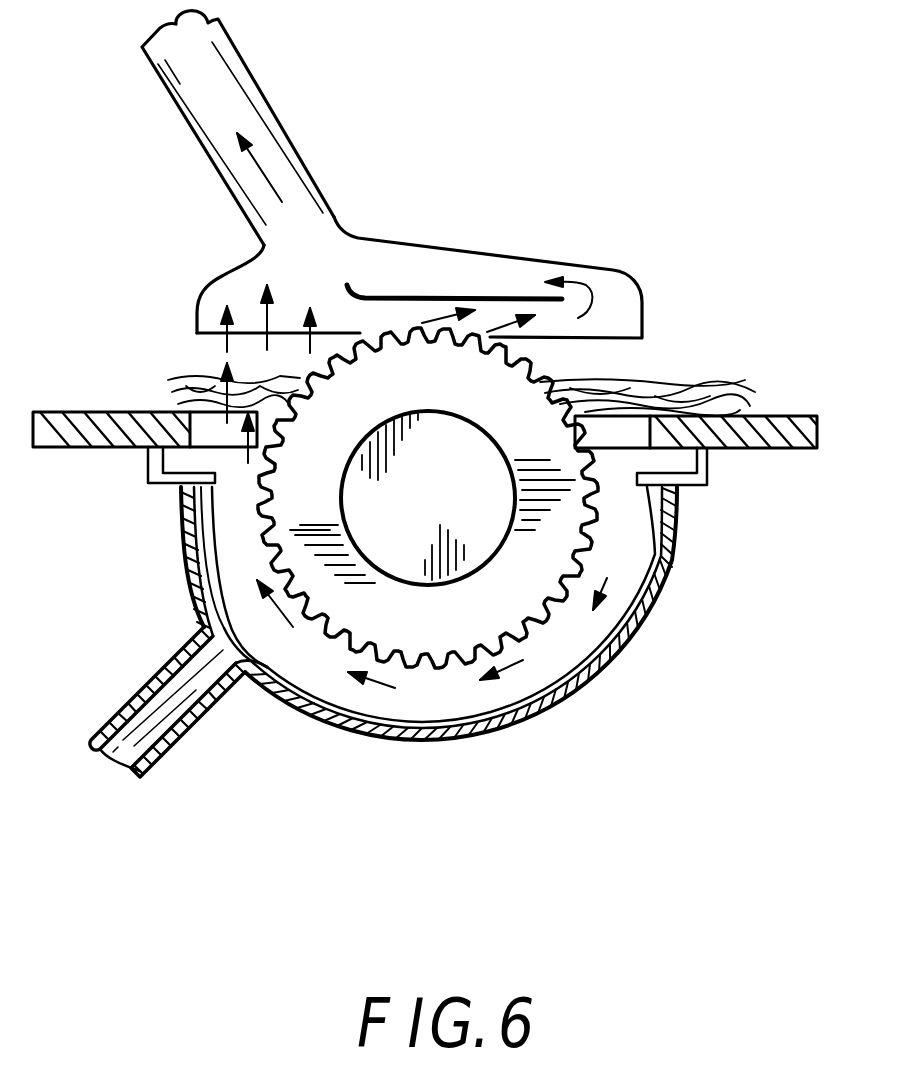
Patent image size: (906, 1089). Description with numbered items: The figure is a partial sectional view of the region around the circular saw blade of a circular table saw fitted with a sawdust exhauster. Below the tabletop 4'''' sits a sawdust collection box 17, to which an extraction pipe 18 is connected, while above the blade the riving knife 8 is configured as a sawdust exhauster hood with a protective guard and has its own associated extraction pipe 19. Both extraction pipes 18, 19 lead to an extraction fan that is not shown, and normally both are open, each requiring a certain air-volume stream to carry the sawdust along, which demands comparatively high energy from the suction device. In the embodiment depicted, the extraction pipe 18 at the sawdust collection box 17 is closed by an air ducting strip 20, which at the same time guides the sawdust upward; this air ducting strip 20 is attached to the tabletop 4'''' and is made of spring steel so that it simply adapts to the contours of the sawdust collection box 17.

The extraction pipe 19 is at (208, 84).
The riving knife 8 is at (445, 262).
The tabletop 4'''' is at (435, 467).
The sawdust collection box 17 is at (612, 670).
The extraction pipe 18 is at (137, 773).
The air ducting strip 20 is at (247, 677).